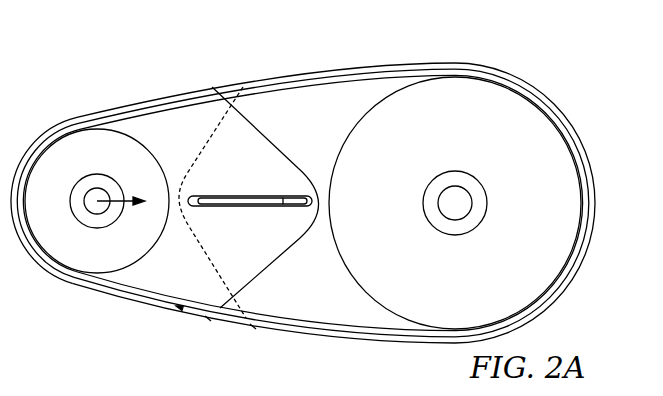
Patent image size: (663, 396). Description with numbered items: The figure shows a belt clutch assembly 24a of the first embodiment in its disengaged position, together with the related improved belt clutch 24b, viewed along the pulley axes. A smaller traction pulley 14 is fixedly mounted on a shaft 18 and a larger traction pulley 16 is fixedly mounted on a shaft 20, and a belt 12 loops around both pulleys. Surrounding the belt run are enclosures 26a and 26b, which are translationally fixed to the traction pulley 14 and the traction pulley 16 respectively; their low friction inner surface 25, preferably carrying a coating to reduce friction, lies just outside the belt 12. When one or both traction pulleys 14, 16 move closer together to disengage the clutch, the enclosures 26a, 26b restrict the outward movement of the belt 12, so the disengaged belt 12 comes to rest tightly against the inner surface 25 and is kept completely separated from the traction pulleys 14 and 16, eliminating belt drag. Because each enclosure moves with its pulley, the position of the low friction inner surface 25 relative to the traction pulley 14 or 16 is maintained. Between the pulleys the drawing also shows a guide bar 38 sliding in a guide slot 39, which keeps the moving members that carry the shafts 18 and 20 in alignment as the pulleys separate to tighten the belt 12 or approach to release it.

The belt clutch assembly 24a is at (146, 76).
The improved belt clutch 24b is at (327, 229).
The traction pulley 14 is at (106, 164).
The traction pulley 16 is at (452, 140).
The shaft 18 is at (93, 207).
The shaft 20 is at (461, 205).
The belt 12 is at (228, 316).
The guide bar 38 is at (224, 207).
The guide slot 39 is at (298, 205).
The enclosure 26a is at (137, 302).
The enclosure 26b is at (355, 342).
The low friction inner surface 25 is at (186, 306).